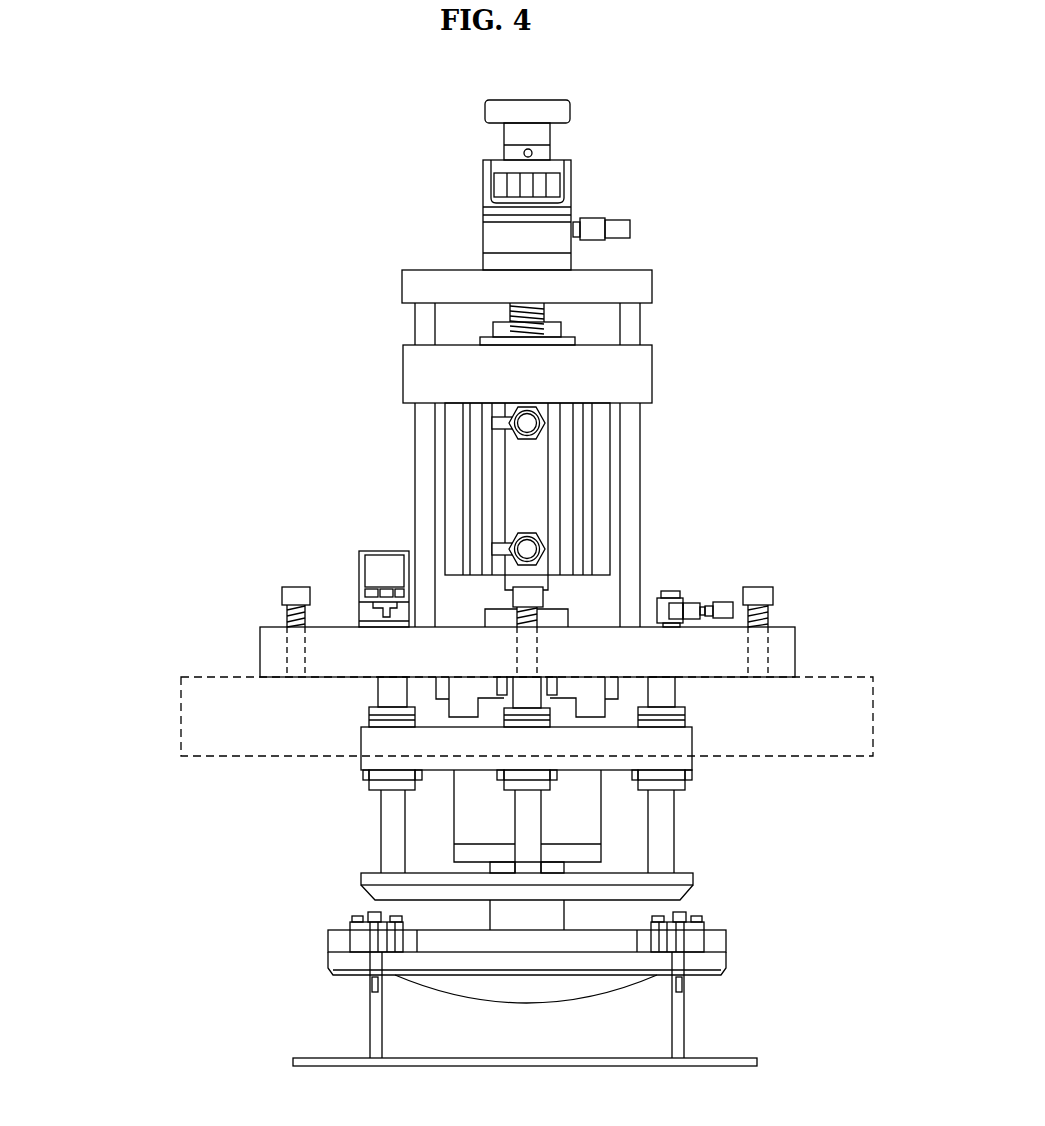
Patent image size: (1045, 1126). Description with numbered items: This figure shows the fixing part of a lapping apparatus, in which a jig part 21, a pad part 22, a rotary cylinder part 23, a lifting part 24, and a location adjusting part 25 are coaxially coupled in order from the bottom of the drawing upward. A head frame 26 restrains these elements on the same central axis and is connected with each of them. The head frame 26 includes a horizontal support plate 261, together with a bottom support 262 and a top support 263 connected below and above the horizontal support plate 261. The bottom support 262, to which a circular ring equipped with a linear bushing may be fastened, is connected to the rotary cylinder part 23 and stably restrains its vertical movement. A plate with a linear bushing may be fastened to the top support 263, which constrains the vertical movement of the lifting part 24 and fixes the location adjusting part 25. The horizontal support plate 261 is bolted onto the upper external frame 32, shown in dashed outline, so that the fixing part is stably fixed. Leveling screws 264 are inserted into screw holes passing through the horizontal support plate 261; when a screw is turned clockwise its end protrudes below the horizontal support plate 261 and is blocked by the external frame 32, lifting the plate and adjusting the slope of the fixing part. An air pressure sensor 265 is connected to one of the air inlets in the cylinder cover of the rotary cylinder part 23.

The jig part 21 is at (293, 1059).
The pad part 22 is at (328, 940).
The rotary cylinder part 23 is at (585, 809).
The lifting part 24 is at (592, 443).
The location adjusting part 25 is at (494, 177).
The head frame 26 is at (100, 442).
The horizontal support plate 261 is at (260, 650).
The bottom support 262 is at (378, 830).
The top support 263 is at (413, 437).
The leveling screws 264 is at (282, 596).
The air pressure sensor 265 is at (359, 557).
The external frame 32 is at (875, 713).